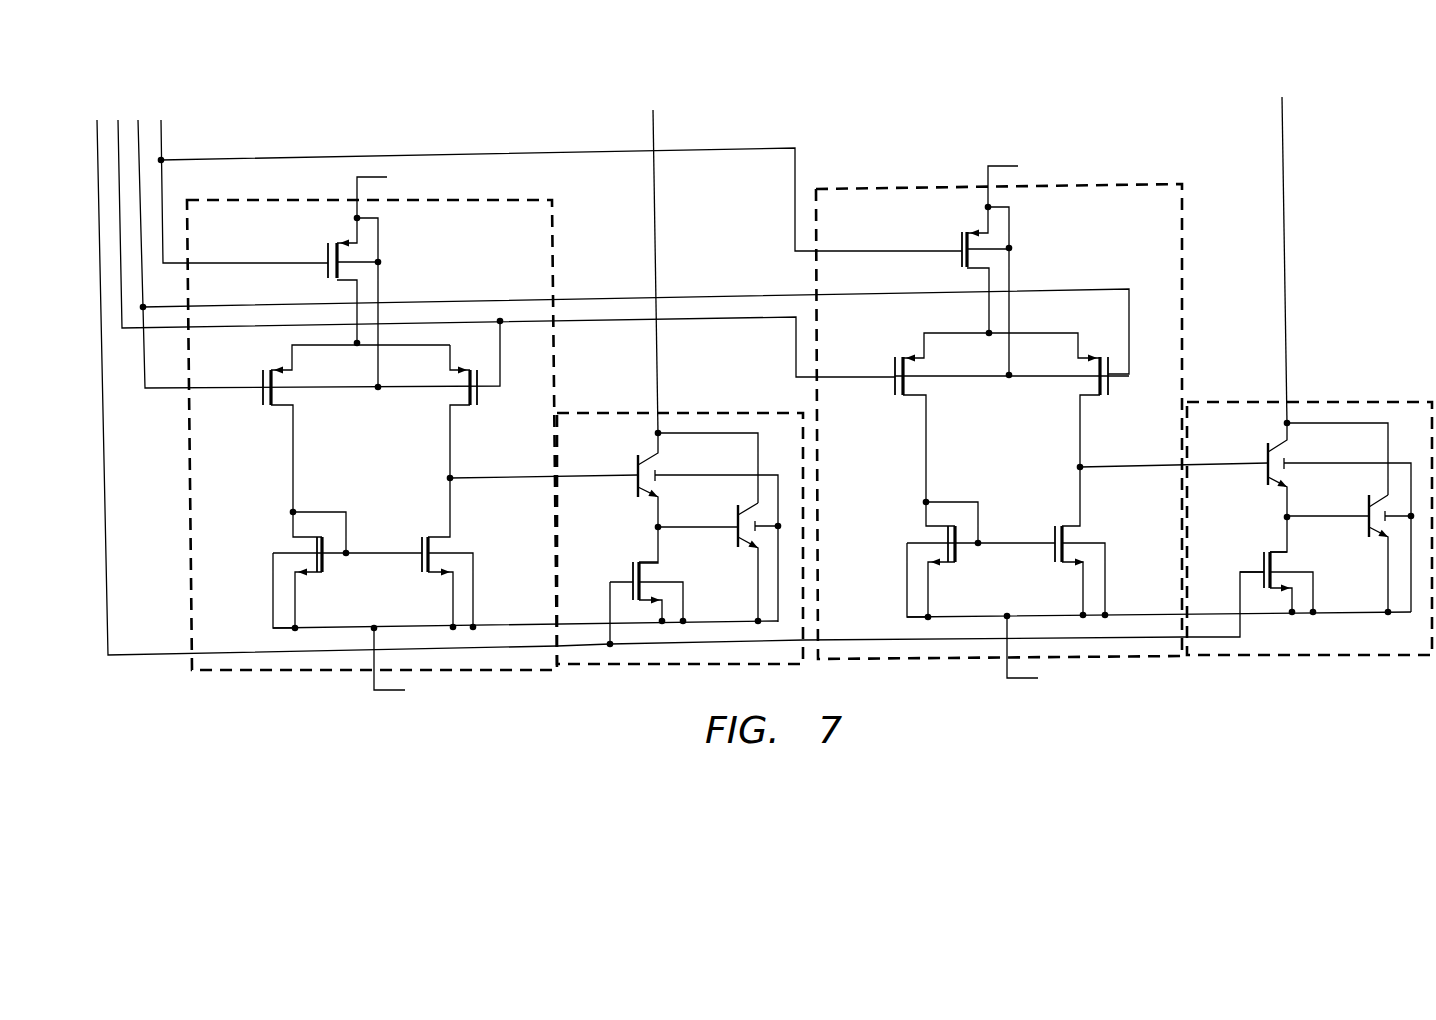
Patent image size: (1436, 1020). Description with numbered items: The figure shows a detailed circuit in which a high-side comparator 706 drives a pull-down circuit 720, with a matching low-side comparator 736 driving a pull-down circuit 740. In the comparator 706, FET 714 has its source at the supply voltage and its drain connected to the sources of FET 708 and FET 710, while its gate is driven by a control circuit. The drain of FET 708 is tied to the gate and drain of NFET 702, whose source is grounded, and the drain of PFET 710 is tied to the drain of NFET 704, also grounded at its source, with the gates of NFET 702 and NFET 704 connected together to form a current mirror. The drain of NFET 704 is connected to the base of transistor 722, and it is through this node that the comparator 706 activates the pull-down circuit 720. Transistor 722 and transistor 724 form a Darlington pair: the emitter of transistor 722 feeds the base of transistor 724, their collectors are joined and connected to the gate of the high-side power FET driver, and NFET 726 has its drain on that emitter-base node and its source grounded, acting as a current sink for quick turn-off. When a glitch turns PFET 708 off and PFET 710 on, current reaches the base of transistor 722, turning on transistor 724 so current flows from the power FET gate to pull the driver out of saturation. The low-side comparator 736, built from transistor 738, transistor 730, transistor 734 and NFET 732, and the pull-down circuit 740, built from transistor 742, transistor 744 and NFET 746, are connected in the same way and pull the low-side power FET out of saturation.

The NFET 702 is at (328, 568).
The NFET 704 is at (418, 538).
The comparator 706 is at (273, 668).
The FET 708 is at (258, 398).
The FET 710 is at (488, 398).
The FET 714 is at (322, 250).
The pull-down circuit 720 is at (645, 657).
The transistor 722 is at (632, 458).
The transistor 724 is at (733, 508).
The NFET 726 is at (628, 563).
The transistor 730 is at (1113, 390).
The NFET 732 is at (962, 557).
The transistor 734 is at (957, 238).
The comparator 736 is at (1100, 652).
The transistor 738 is at (890, 395).
The pull-down circuit 740 is at (1352, 650).
The transistor 742 is at (1262, 447).
The transistor 744 is at (1365, 500).
The NFET 746 is at (1260, 553).